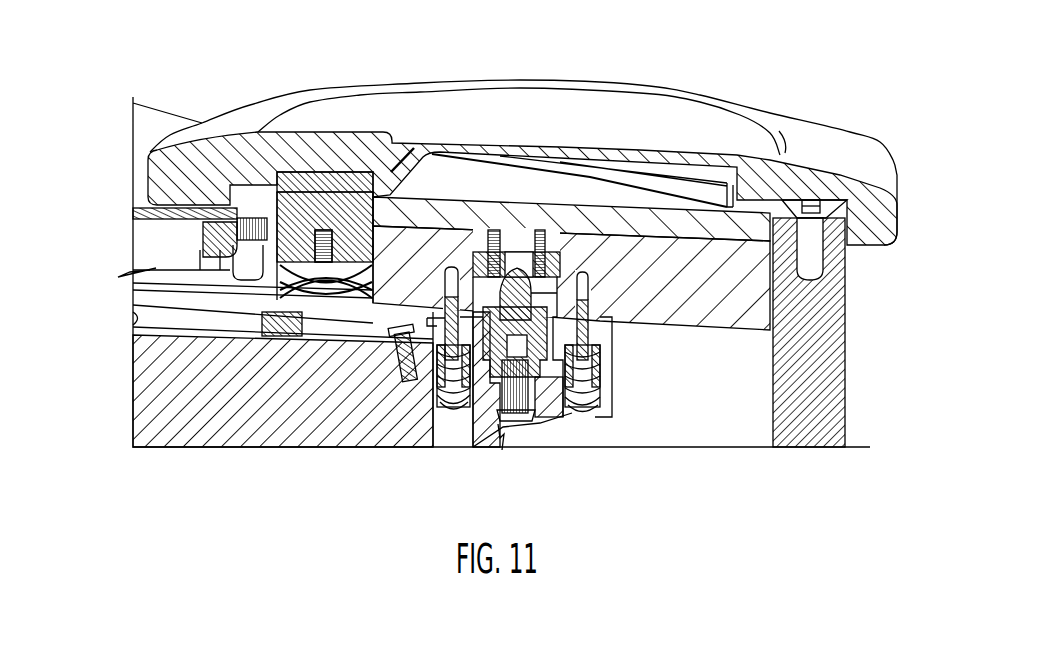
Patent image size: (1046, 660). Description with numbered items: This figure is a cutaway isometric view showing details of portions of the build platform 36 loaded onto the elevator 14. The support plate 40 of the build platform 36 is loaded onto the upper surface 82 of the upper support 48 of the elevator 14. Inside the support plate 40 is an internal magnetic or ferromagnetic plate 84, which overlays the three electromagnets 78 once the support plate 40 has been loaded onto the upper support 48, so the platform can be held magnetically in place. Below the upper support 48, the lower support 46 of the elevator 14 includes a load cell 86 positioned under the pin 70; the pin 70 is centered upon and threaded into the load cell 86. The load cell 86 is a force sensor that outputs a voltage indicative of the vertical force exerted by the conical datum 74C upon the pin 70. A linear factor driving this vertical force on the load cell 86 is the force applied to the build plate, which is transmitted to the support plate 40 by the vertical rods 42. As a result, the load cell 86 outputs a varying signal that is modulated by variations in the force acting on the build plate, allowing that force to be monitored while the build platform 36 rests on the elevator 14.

The elevator 14 is at (122, 242).
The build platform 36 is at (905, 170).
The support plate 40 is at (772, 178).
The vertical rods 42 is at (830, 380).
The lower support 46 is at (155, 362).
The upper support 48 is at (740, 305).
The pin 70 is at (533, 232).
The conical datum 74C is at (518, 290).
The electromagnets 78 is at (280, 189).
The upper surface 82 is at (635, 203).
The magnetic or ferromagnetic plate 84 is at (333, 187).
The load cell 86 is at (473, 447).